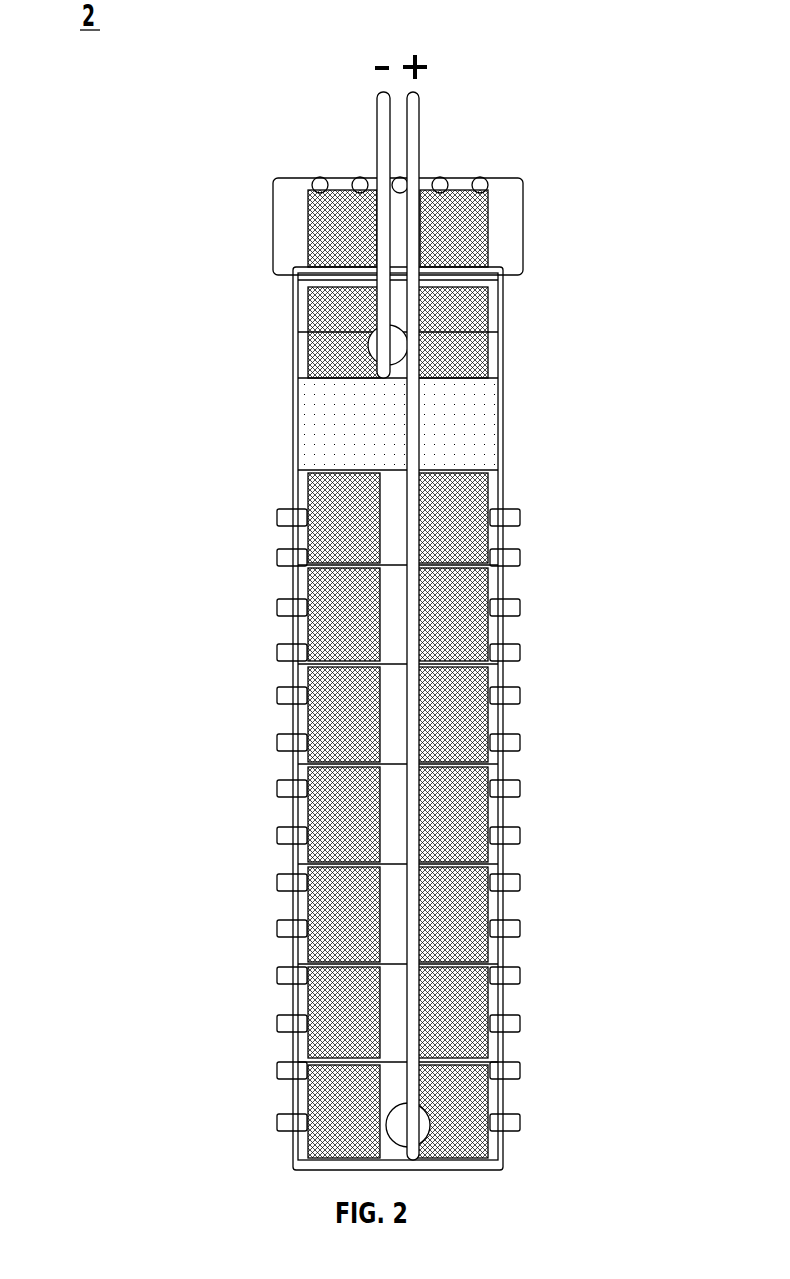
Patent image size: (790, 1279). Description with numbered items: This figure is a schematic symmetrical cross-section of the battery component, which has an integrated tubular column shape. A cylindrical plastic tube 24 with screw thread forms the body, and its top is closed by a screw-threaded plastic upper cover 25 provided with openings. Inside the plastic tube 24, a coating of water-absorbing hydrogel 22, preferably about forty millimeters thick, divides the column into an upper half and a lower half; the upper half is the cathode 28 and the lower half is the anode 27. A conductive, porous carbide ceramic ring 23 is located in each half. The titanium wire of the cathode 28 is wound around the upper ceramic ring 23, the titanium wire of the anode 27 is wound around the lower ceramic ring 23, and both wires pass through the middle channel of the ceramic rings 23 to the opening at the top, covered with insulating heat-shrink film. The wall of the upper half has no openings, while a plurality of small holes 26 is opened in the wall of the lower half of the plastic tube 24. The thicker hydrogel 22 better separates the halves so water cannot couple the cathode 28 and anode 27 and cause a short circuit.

The water-absorbing hydrogel 22 is at (483, 409).
The ceramic ring 23 is at (483, 319).
The plastic tube 24 is at (481, 718).
The plastic upper cover 25 is at (471, 226).
The small holes 26 is at (473, 799).
The anode 27 is at (536, 607).
The cathode 28 is at (522, 223).